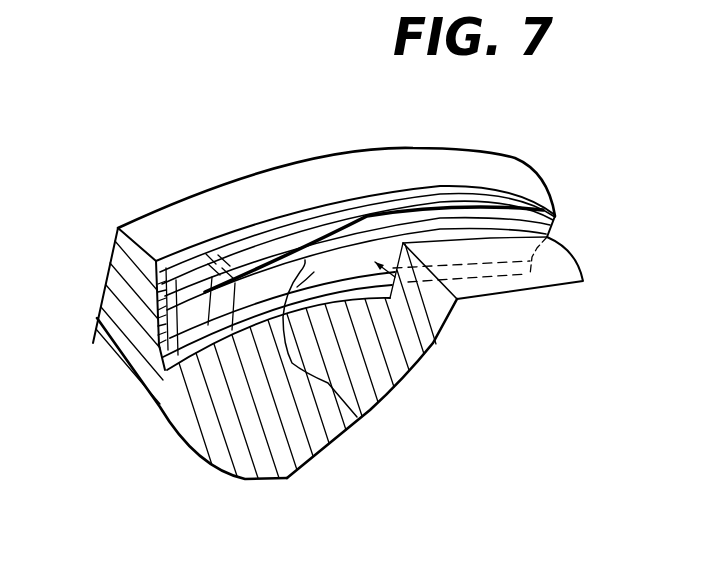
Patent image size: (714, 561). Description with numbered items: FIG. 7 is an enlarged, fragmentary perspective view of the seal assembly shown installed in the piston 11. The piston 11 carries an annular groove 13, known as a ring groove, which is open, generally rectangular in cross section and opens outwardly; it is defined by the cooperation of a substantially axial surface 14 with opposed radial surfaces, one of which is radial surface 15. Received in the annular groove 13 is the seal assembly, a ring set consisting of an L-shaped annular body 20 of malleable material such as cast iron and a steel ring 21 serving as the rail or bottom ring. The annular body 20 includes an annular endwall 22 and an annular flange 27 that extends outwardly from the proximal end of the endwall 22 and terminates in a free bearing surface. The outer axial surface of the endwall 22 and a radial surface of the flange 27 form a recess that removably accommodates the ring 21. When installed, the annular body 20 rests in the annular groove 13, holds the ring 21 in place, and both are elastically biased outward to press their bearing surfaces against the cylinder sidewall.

The piston 11 is at (588, 246).
The annular groove 13 is at (357, 417).
The axial surface 14 is at (230, 350).
The radial surface 15 is at (507, 188).
The annular body 20 is at (238, 243).
The ring 21 is at (434, 330).
The annular endwall 22 is at (160, 403).
The annular flange 27 is at (152, 294).